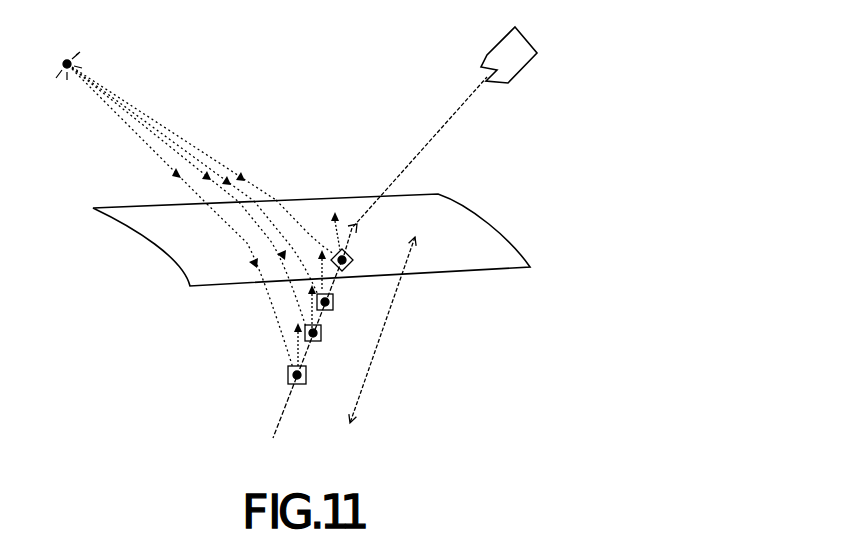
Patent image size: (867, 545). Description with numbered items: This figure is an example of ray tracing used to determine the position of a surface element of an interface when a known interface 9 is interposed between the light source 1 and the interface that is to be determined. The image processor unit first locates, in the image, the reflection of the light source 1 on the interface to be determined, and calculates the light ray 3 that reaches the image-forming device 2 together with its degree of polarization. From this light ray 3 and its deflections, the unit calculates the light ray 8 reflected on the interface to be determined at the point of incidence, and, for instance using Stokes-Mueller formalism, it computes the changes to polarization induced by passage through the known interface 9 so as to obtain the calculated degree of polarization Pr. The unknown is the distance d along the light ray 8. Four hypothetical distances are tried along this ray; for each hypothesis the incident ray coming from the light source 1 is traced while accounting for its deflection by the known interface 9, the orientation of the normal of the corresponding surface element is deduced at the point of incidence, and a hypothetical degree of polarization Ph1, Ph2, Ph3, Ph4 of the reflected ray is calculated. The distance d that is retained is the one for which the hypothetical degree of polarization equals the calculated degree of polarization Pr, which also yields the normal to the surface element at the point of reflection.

The light source 1 is at (63, 58).
The image-forming device 2 is at (500, 40).
The light ray 3 is at (424, 147).
The light ray 8 is at (282, 417).
The known interface 9 is at (101, 214).
The hypothetical degree of polarization Ph1 is at (332, 221).
The hypothetical degree of polarization Ph2 is at (324, 261).
The hypothetical degree of polarization Ph3 is at (311, 301).
The hypothetical degree of polarization Ph4 is at (296, 338).
The calculated degree of polarization Pr is at (302, 391).
The distance d is at (382, 330).